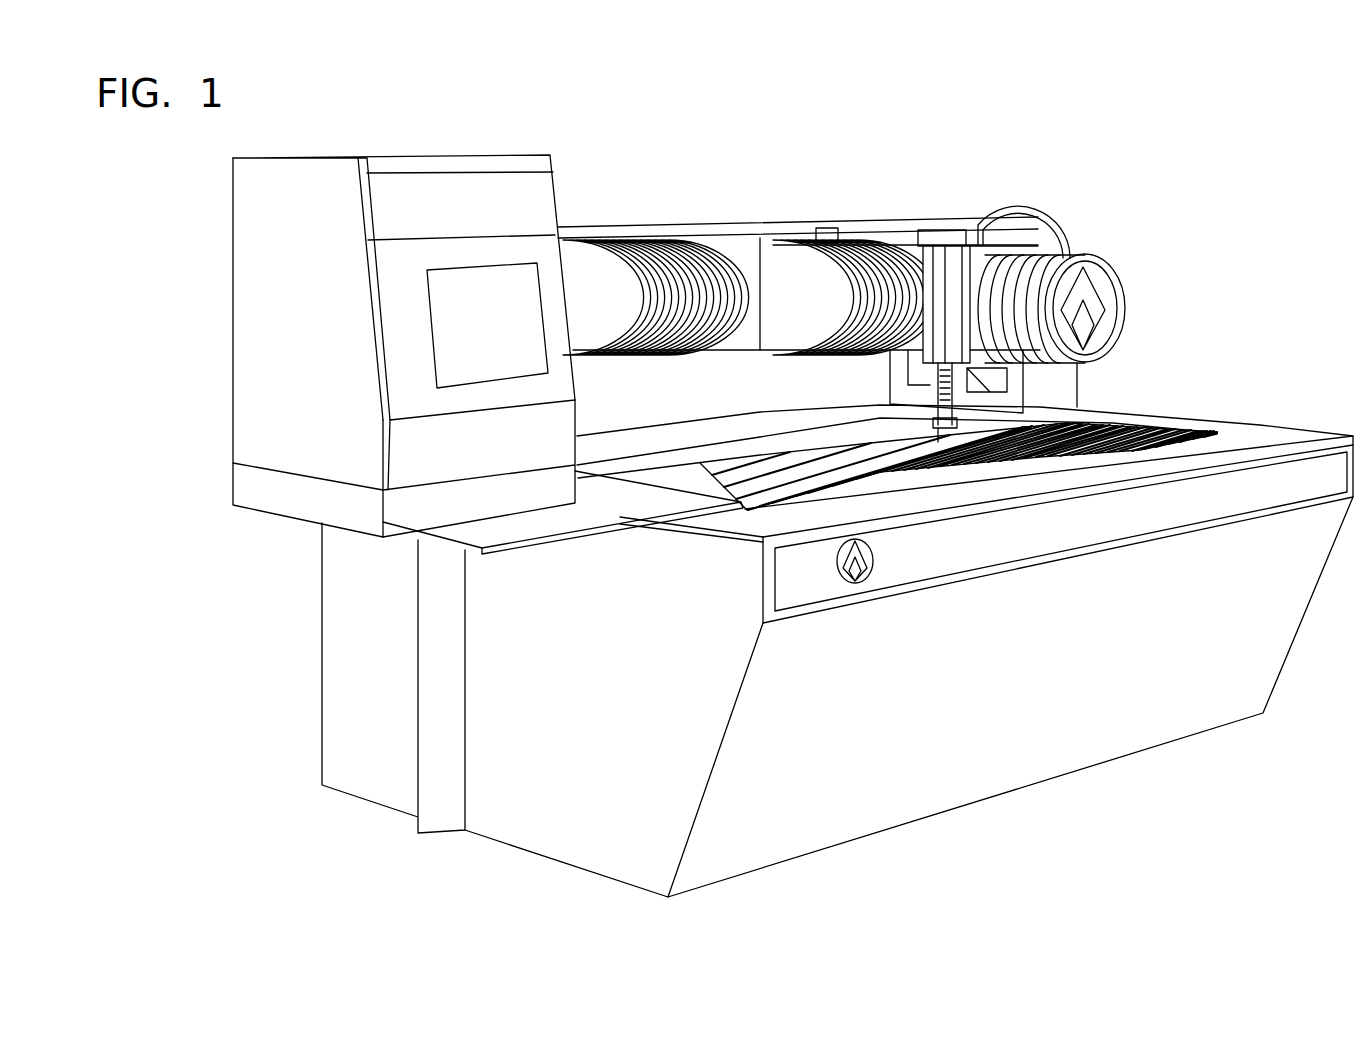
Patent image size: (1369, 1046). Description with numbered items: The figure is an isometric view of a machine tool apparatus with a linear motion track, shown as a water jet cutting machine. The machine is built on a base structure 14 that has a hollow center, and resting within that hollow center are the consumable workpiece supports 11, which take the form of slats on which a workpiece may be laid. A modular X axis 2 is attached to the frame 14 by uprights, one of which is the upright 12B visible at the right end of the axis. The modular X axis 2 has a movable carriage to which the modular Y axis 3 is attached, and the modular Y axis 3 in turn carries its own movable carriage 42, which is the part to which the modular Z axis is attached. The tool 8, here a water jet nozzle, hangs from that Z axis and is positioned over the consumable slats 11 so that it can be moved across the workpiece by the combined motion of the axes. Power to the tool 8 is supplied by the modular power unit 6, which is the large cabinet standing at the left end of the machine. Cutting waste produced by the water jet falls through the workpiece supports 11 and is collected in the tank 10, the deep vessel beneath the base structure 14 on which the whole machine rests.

The modular X axis 2 is at (843, 217).
The modular Y axis 3 is at (1067, 257).
The modular power unit 6 is at (430, 158).
The tool 8 is at (930, 440).
The tank 10 is at (1278, 638).
The consumable workpiece supports 11 is at (1078, 437).
The upright 12B is at (1042, 220).
The base structure 14 is at (1270, 430).
The movable carriage 42 is at (983, 233).